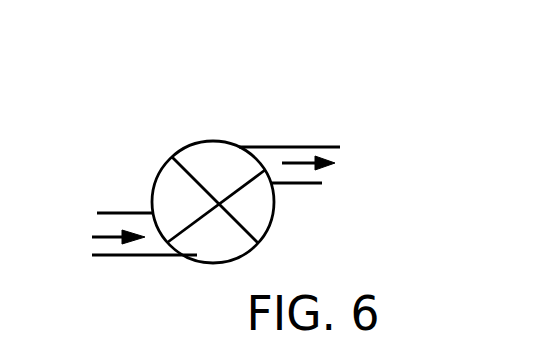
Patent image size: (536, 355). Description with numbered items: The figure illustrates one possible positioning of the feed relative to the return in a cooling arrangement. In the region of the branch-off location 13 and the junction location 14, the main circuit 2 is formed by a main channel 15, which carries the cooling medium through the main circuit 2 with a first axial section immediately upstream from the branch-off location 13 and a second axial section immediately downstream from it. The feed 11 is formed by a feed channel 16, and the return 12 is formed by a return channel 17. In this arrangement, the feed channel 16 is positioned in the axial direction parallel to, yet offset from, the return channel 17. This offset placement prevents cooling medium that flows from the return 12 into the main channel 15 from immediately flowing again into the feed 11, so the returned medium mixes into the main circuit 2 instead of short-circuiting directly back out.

The main circuit 2 is at (208, 170).
The feed 11 is at (308, 172).
The return 12 is at (110, 225).
The branch-off location 13 is at (253, 147).
The junction location 14 is at (160, 240).
The main channel 15 is at (177, 150).
The feed channel 16 is at (293, 147).
The return channel 17 is at (120, 257).